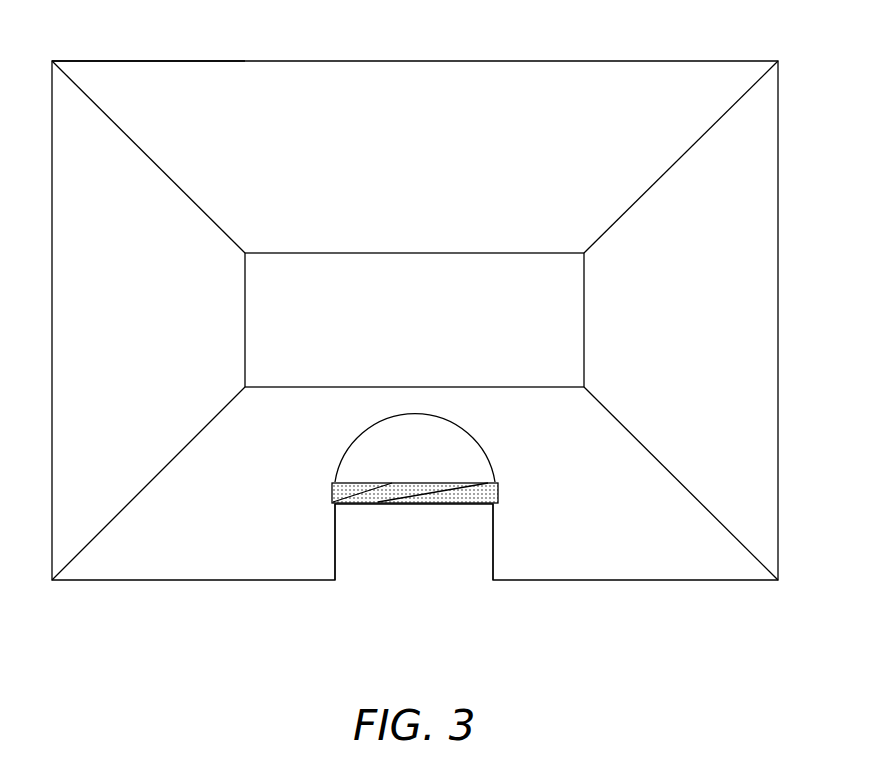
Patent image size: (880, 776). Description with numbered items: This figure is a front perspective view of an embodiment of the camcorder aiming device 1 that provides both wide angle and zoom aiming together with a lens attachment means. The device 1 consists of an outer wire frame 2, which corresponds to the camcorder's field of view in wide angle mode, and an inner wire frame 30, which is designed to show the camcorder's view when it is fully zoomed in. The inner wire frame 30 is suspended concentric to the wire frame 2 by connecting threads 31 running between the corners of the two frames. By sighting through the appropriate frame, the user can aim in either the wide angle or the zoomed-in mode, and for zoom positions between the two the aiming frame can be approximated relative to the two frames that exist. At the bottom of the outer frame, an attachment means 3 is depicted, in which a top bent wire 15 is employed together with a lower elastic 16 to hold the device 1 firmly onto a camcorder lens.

The aiming device 1 is at (778, 183).
The wire frame 2 is at (67, 58).
The attachment means 3 is at (494, 468).
The top bent wire 15 is at (335, 525).
The lower elastic 16 is at (433, 505).
The inner wire frame 30 is at (414, 251).
The connecting threads 31 is at (150, 156).